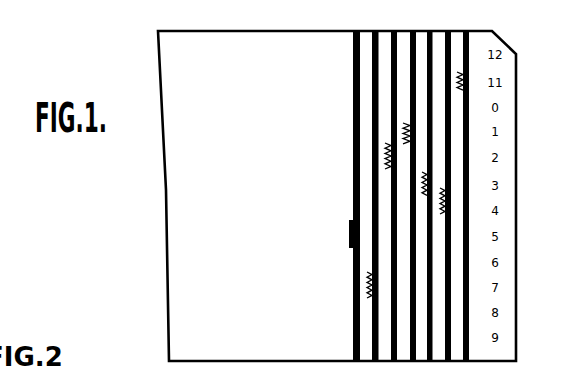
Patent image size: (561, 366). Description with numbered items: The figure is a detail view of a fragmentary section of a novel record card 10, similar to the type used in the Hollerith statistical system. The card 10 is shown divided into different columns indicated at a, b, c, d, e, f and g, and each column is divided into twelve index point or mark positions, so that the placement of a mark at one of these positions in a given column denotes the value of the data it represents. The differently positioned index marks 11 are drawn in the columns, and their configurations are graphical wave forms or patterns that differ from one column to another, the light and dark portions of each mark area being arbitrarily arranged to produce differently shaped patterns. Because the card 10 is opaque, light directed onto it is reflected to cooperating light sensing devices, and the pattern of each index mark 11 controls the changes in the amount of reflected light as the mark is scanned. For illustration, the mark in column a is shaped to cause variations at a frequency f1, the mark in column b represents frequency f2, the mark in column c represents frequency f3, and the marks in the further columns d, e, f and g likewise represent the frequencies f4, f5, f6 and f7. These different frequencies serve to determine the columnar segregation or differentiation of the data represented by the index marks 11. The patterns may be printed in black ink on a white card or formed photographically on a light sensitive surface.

The record card 10 is at (175, 66).
The index marks 11 is at (350, 226).
The column a is at (353, 38).
The column b is at (372, 38).
The column c is at (391, 38).
The column d is at (410, 38).
The column e is at (427, 38).
The column f is at (445, 38).
The column g is at (470, 38).
The frequency f1 is at (350, 238).
The frequency f2 is at (367, 287).
The frequency f3 is at (385, 158).
The frequency f4 is at (403, 133).
The frequency f5 is at (422, 187).
The frequency f6 is at (443, 212).
The frequency f7 is at (458, 88).